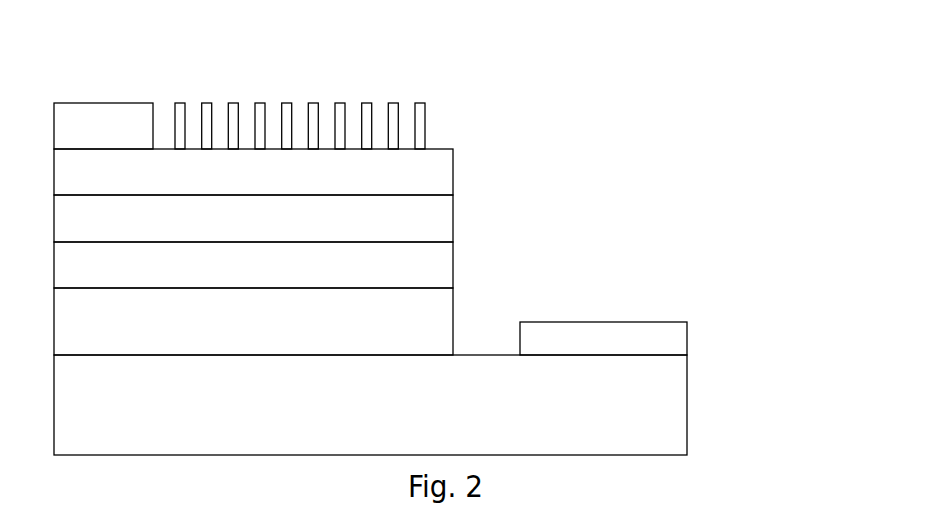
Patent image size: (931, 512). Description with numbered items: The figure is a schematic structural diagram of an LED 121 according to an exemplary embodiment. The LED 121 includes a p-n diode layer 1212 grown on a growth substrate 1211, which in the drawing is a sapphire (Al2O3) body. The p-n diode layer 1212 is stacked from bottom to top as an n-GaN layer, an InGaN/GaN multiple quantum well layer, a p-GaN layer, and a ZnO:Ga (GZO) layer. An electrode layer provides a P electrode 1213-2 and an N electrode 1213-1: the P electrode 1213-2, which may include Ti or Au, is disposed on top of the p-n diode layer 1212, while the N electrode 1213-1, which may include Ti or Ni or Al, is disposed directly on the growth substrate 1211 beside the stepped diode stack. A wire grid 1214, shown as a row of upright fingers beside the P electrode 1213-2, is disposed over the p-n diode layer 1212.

The LED 121 is at (613, 61).
The growth substrate 1211 is at (687, 403).
The p-n diode layer 1212 is at (457, 189).
The N electrode 1213-1 is at (687, 338).
The P electrode 1213-2 is at (153, 105).
The wire grid 1214 is at (425, 127).